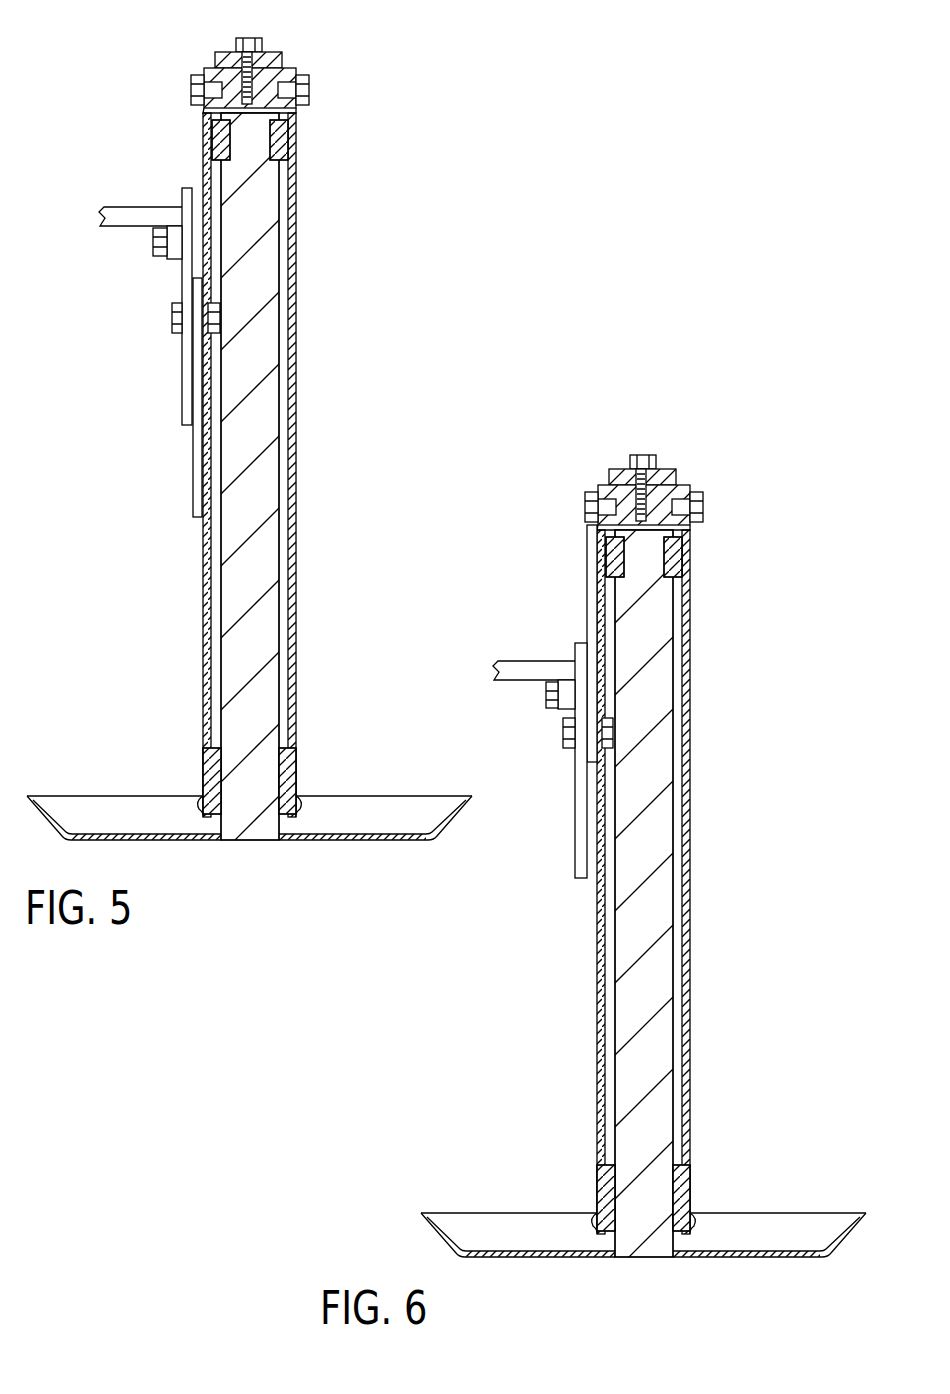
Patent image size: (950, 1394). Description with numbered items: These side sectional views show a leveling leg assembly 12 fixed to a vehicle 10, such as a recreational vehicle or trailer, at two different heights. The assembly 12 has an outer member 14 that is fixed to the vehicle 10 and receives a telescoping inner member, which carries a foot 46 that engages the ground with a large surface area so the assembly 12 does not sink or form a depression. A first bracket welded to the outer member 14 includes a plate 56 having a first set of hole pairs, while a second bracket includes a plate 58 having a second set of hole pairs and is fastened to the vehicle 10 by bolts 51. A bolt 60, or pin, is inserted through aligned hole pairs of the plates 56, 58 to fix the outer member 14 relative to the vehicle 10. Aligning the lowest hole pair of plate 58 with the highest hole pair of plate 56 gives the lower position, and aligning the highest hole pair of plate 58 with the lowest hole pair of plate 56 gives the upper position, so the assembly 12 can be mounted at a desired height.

In FIG. 5, the vehicle 10 is at (130, 205).
In FIG. 6, the vehicle 10 is at (527, 660).
In FIG. 5, the leveling leg assembly 12 is at (375, 58).
In FIG. 6, the leveling leg assembly 12 is at (738, 428).
In FIG. 5, the outer member 14 is at (203, 650).
In FIG. 6, the outer member 14 is at (597, 1068).
In FIG. 5, the foot 46 is at (458, 806).
In FIG. 6, the foot 46 is at (858, 1226).
In FIG. 5, the bolts 51 is at (153, 240).
In FIG. 6, the bolts 51 is at (547, 696).
In FIG. 5, the plate 56 is at (200, 467).
In FIG. 6, the plate 56 is at (587, 535).
In FIG. 5, the plate 58 is at (183, 197).
In FIG. 6, the plate 58 is at (575, 856).
In FIG. 5, the bolt 60 is at (172, 320).
In FIG. 6, the bolt 60 is at (563, 736).